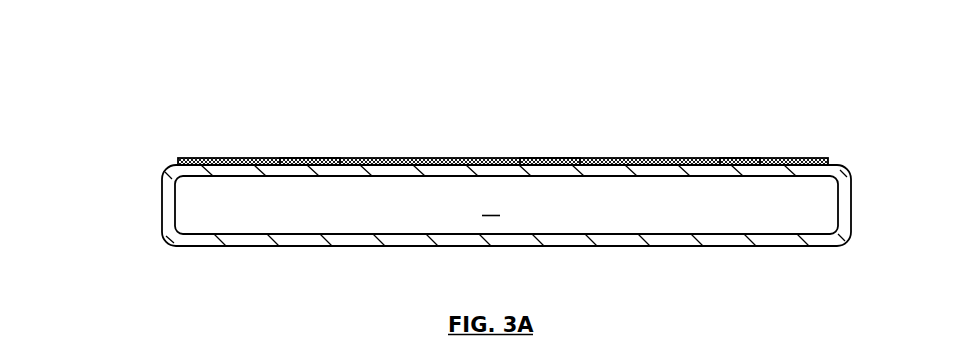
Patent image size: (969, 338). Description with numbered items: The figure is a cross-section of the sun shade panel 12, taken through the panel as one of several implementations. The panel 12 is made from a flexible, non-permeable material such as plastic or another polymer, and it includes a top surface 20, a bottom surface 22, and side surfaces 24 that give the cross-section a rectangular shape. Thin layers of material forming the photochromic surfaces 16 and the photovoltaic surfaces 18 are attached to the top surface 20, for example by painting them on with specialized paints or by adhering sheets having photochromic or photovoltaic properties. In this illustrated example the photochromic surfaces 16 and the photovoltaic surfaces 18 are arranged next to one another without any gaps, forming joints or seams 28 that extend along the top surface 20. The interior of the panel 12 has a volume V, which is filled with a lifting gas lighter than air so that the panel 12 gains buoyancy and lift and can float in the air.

The panel 12 is at (156, 160).
The photochromic surfaces 16 is at (447, 158).
The photovoltaic surfaces 18 is at (310, 158).
The top surface 20 is at (233, 165).
The bottom surface 22 is at (232, 242).
The side surfaces 24 is at (160, 200).
The joints or seams 28 is at (734, 148).